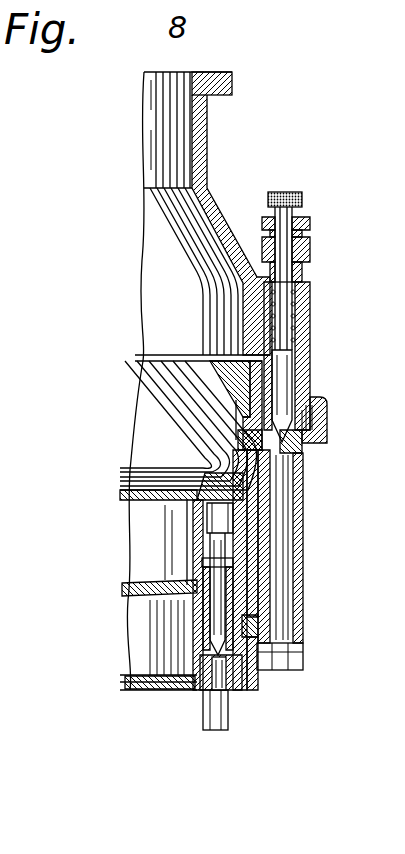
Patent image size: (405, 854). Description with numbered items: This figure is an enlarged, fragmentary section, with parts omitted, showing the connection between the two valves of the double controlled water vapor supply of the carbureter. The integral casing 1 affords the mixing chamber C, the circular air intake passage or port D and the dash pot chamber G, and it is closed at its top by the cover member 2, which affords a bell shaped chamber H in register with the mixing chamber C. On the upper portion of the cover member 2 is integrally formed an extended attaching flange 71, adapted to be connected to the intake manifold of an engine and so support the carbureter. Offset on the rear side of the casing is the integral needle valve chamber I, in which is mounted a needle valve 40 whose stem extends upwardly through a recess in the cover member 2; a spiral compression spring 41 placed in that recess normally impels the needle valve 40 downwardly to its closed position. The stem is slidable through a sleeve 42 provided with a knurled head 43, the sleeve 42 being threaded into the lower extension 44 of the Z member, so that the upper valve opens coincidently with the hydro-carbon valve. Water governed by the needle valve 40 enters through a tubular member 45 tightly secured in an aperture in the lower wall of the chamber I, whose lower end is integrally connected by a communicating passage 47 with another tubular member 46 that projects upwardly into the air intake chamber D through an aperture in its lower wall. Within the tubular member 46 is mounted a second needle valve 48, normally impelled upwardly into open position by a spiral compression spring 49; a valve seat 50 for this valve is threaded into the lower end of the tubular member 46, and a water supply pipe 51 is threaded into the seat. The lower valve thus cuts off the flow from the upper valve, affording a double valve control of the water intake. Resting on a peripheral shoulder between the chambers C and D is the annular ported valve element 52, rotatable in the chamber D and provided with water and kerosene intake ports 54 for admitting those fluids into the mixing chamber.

The attaching flange 71 is at (232, 82).
The bell shaped chamber H is at (165, 276).
The annular ported valve element 52 is at (215, 372).
The mixing chamber C is at (150, 398).
The water and kerosene intake ports 54 is at (235, 408).
The air intake passage or port D is at (158, 532).
The casing 1 is at (135, 595).
The dash pot chamber G is at (150, 632).
The needle valve 48 is at (215, 605).
The spiral compression spring 49 is at (235, 610).
The tubular member 46 is at (240, 620).
The communicating passage 47 is at (235, 628).
The valve seat 50 is at (243, 676).
The water supply pipe 51 is at (222, 730).
The knurled head 43 is at (308, 224).
The lower extension 44 is at (311, 247).
The sleeve 42 is at (300, 270).
The spiral compression spring 41 is at (308, 295).
The cover member 2 is at (308, 323).
The needle valve 40 is at (290, 395).
The needle valve chamber I is at (305, 423).
The tubular member 45 is at (304, 504).